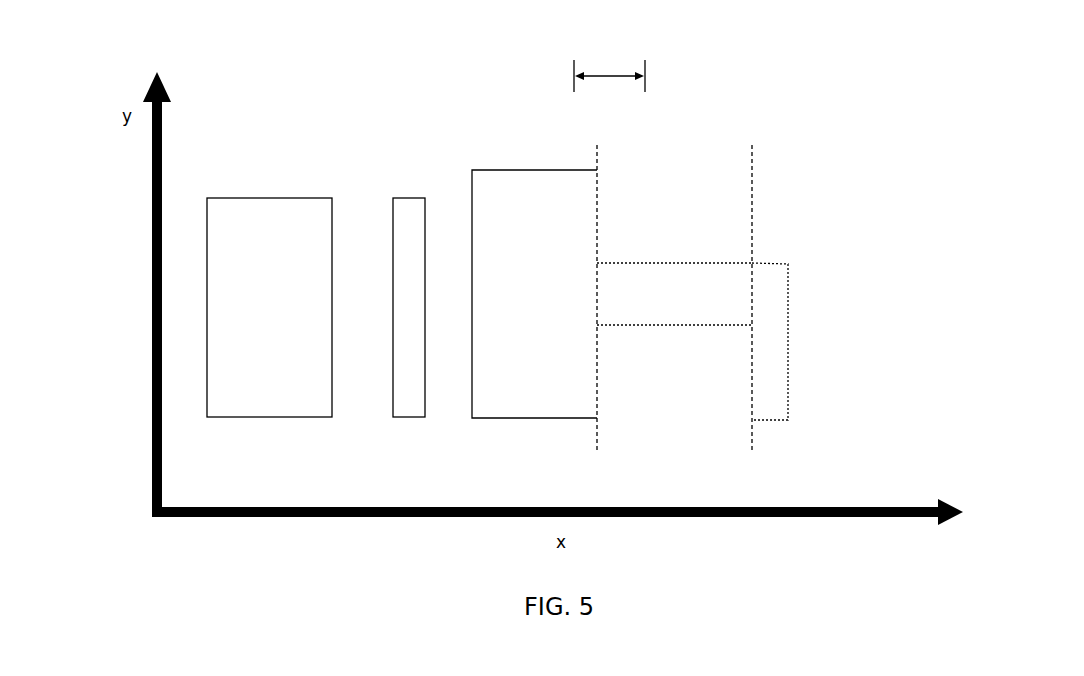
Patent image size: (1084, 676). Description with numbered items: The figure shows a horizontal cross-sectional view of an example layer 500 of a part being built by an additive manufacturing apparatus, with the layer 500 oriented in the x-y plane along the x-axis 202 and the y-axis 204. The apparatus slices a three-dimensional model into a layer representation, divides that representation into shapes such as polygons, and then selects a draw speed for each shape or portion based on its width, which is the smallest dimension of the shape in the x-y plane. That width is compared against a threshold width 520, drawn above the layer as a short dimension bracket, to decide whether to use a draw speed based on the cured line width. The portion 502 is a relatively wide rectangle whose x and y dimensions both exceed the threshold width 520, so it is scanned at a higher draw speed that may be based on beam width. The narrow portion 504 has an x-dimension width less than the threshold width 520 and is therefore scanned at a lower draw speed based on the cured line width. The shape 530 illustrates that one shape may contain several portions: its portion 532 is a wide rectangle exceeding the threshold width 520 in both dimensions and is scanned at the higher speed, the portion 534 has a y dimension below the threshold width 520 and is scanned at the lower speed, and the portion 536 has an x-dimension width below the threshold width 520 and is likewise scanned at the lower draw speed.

The layer 500 is at (286, 86).
The x-axis 202 is at (358, 518).
The y-axis 204 is at (152, 360).
The portion 502 is at (305, 199).
The portion 504 is at (418, 199).
The threshold width 520 is at (608, 72).
The shape 530 is at (622, 287).
The portion 532 is at (550, 302).
The portion 534 is at (680, 302).
The portion 536 is at (785, 377).